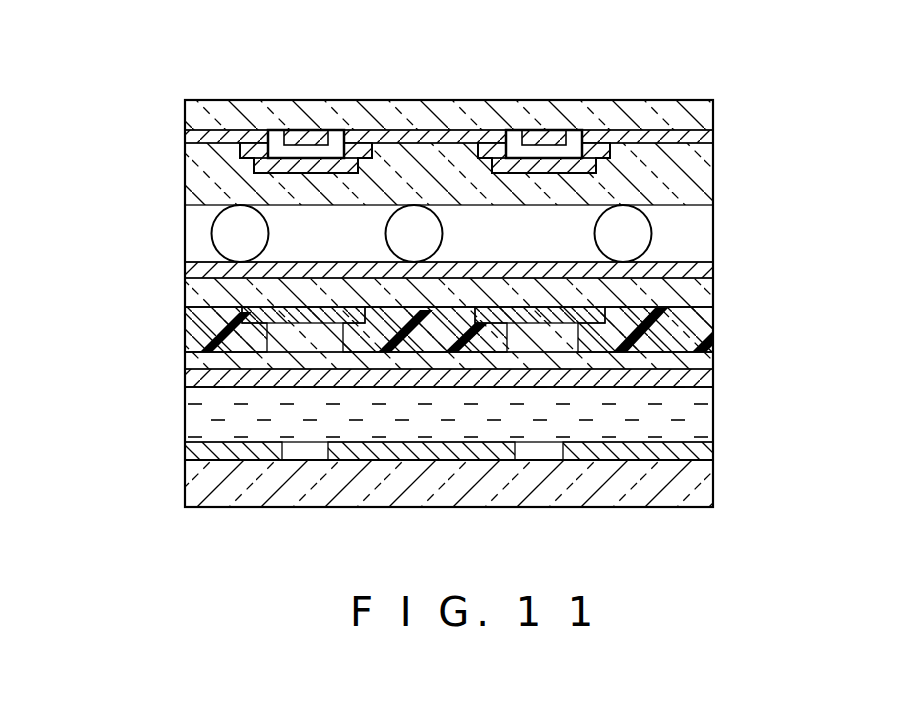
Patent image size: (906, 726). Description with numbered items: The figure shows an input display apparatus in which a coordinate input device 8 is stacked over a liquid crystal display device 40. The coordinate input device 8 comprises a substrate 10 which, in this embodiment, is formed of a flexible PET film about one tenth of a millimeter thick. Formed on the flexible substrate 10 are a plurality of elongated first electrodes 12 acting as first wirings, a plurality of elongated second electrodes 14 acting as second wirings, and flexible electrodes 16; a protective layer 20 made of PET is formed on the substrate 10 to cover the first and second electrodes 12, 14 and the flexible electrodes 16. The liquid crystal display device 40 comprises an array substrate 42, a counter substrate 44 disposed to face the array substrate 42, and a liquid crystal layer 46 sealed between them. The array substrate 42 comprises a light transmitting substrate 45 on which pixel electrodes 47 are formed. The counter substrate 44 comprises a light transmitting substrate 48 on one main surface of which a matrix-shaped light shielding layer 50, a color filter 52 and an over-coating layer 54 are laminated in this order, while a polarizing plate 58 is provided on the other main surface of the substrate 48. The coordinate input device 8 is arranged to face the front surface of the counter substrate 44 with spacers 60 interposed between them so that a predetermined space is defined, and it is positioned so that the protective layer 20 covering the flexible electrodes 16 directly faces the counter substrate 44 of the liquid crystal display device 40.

The coordinate input device 8 is at (702, 86).
The substrate 10 is at (631, 113).
The first electrodes 12 is at (298, 130).
The second electrodes 14 is at (198, 134).
The flexible electrodes 16 is at (303, 167).
The protective layer 20 is at (428, 150).
The liquid crystal display device 40 is at (764, 362).
The array substrate 42 is at (175, 487).
The counter substrate 44 is at (176, 302).
The substrate 45 is at (505, 477).
The liquid crystal layer 46 is at (696, 409).
The pixel electrodes 47 is at (407, 452).
The substrate 48 is at (696, 299).
The light shielding layer 50 is at (297, 323).
The color filter 52 is at (210, 322).
The over-coating layer 54 is at (210, 355).
The polarizing plate 58 is at (696, 249).
The spacers 60 is at (222, 230).